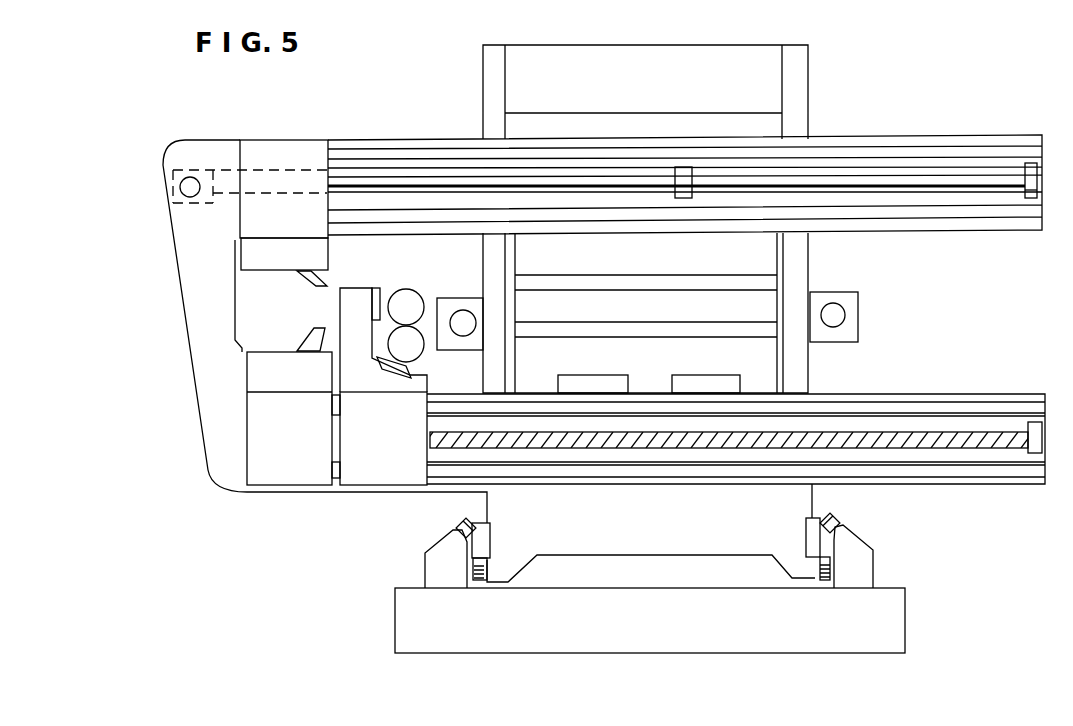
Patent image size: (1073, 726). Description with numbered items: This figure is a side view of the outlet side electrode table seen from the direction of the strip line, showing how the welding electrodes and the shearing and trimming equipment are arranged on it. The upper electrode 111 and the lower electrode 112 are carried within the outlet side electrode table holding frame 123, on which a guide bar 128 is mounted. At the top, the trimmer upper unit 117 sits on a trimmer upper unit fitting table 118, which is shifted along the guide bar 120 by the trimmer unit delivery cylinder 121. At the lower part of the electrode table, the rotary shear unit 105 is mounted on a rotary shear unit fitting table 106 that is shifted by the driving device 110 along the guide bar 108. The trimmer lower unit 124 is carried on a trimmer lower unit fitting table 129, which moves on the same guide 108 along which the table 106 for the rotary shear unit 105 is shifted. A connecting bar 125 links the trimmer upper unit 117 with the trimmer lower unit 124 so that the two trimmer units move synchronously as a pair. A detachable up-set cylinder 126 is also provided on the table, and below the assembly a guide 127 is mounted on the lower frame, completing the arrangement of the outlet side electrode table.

The rotary shear unit 105 is at (355, 287).
The rotary shear unit fitting table 106 is at (373, 482).
The guide bar 108 is at (930, 400).
The driving device 110 is at (980, 432).
The upper electrode 111 is at (567, 290).
The lower electrode 112 is at (648, 325).
The trimmer upper unit 117 is at (267, 271).
The trimmer upper unit fitting table 118 is at (287, 139).
The guide bar 120 is at (900, 143).
The trimmer unit delivery cylinder 121 is at (958, 168).
The outlet side electrode table holding frame 123 is at (812, 258).
The trimmer lower unit 124 is at (268, 351).
The connecting bar 125 is at (173, 277).
The detachable up-set cylinder 126 is at (458, 298).
The guide 127 is at (875, 540).
The guide bar 128 is at (825, 518).
The trimmer lower unit fitting table 129 is at (282, 467).